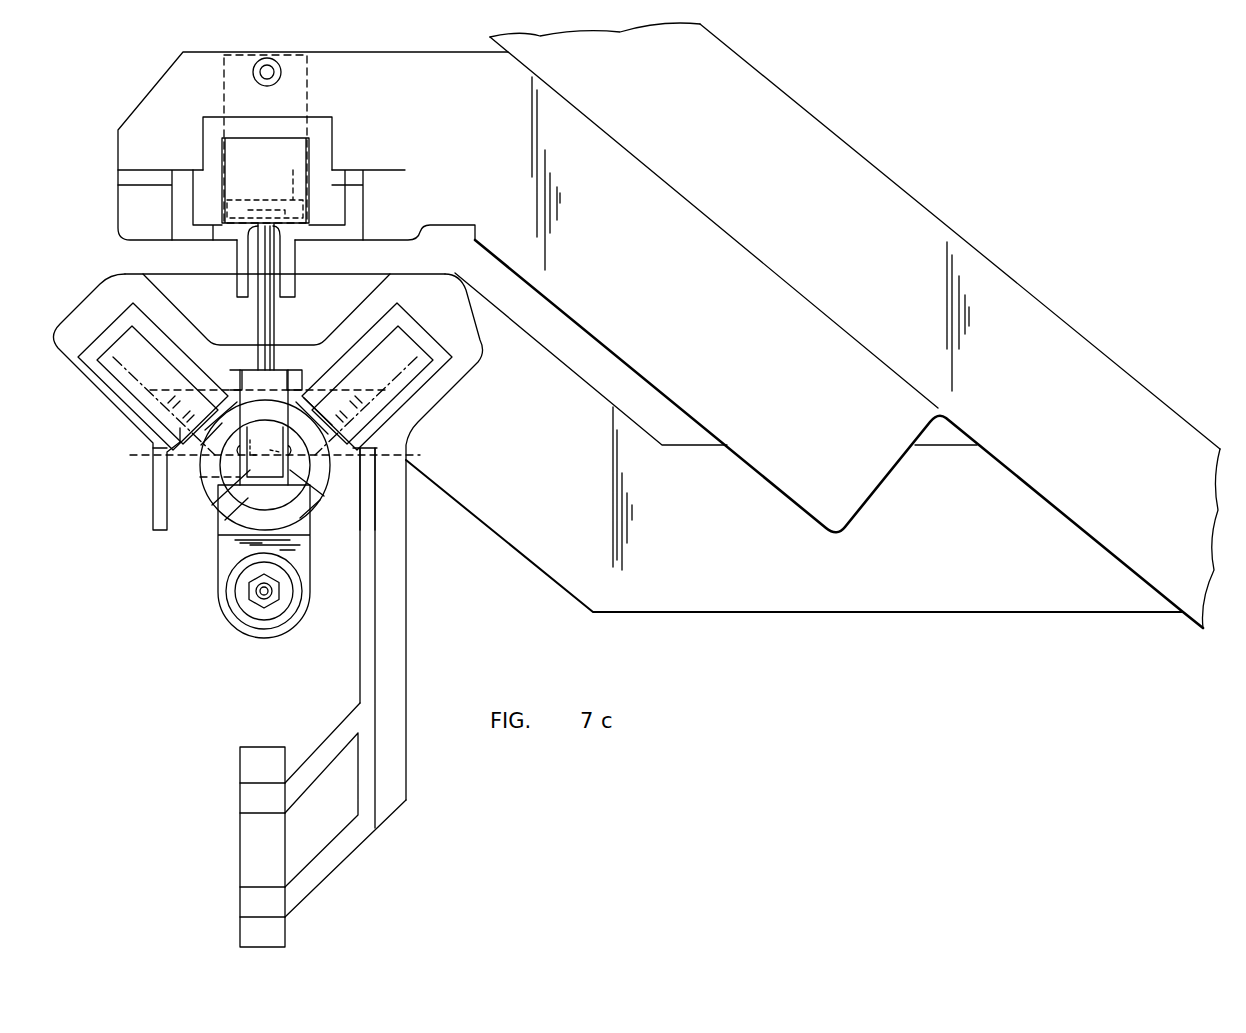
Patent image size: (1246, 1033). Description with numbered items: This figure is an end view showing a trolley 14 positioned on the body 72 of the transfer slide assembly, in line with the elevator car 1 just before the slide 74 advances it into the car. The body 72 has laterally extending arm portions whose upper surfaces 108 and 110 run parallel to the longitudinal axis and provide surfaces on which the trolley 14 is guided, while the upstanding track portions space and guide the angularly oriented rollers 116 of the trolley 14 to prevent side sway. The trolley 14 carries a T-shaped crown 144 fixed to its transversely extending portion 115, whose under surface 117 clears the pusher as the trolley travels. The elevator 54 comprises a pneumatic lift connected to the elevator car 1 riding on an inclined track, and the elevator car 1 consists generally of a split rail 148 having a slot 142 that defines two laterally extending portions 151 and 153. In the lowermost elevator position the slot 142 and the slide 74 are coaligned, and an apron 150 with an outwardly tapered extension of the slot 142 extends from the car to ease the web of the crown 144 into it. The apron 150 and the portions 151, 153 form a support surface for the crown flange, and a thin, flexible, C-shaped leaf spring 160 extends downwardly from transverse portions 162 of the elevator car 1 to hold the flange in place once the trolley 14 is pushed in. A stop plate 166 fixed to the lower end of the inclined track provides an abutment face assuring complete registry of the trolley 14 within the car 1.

The elevator car 1 is at (461, 72).
The trolley 14 is at (406, 610).
The elevator 54 is at (813, 132).
The body 72 is at (292, 493).
The slide 74 is at (253, 475).
The upper surface 108 is at (150, 455).
The upper surface 110 is at (386, 453).
The transversely extending portion 115 is at (288, 352).
The rollers 116 is at (133, 357).
The under surface 117 is at (230, 388).
The slot 142 is at (257, 234).
The crown 144 is at (265, 180).
The split rail 148 is at (213, 190).
The apron 150 is at (292, 236).
The laterally extending portion 151 is at (216, 213).
The laterally extending portion 153 is at (314, 216).
The leaf spring 160 is at (293, 150).
The transverse portions 162 is at (294, 90).
The stop plate 166 is at (678, 602).